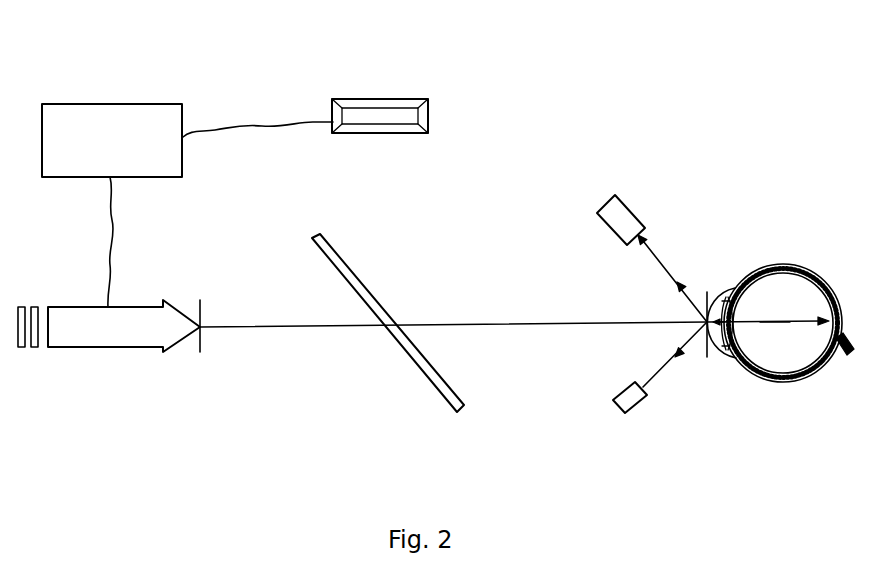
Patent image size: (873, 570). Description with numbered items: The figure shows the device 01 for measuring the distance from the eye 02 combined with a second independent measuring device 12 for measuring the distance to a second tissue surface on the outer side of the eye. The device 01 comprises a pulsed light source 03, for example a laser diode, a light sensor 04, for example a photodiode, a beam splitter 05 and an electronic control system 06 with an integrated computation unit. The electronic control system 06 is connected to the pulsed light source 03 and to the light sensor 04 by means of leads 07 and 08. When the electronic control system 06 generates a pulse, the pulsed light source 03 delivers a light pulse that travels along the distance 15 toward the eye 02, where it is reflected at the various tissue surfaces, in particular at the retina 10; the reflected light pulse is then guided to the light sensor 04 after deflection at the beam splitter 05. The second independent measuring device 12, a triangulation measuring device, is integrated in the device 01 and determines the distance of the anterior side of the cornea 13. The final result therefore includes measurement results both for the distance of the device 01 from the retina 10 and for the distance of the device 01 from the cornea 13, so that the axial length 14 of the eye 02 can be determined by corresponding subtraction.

The device 01 is at (485, 102).
The eye 02 is at (775, 263).
The pulsed light source 03 is at (110, 347).
The light sensor 04 is at (382, 99).
The beam splitter 05 is at (450, 393).
The electronic control system 06 is at (116, 104).
The lead 07 is at (108, 248).
The lead 08 is at (264, 127).
The retina 10 is at (820, 320).
The second independent measuring device 12 is at (623, 398).
The cornea 13 is at (707, 300).
The axial length 14 is at (775, 322).
The distance 15 is at (478, 326).